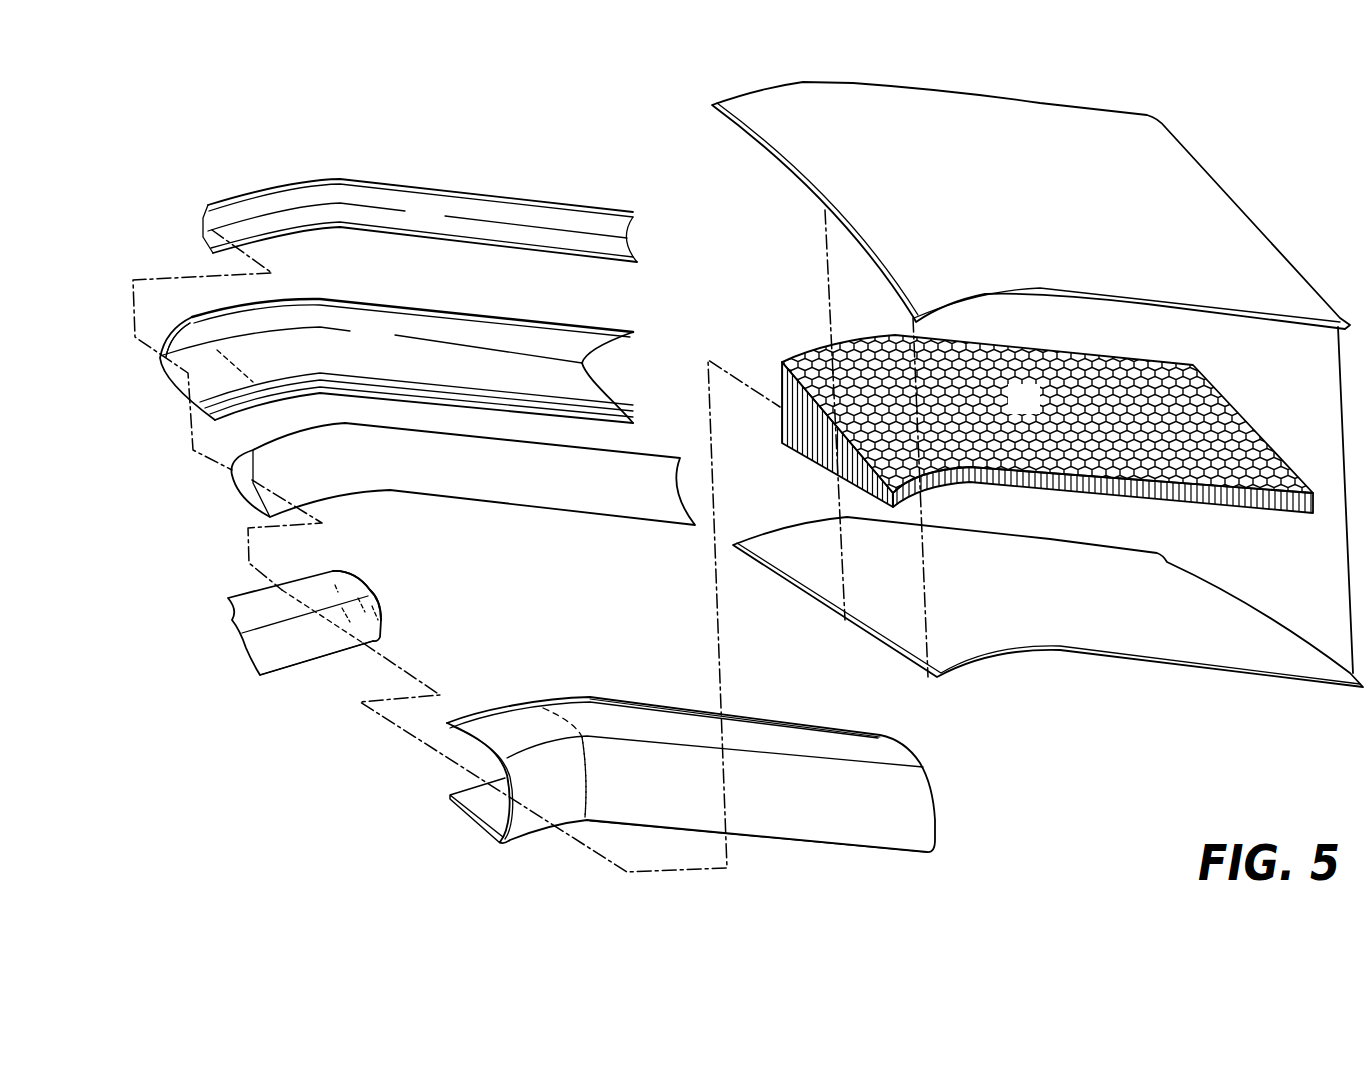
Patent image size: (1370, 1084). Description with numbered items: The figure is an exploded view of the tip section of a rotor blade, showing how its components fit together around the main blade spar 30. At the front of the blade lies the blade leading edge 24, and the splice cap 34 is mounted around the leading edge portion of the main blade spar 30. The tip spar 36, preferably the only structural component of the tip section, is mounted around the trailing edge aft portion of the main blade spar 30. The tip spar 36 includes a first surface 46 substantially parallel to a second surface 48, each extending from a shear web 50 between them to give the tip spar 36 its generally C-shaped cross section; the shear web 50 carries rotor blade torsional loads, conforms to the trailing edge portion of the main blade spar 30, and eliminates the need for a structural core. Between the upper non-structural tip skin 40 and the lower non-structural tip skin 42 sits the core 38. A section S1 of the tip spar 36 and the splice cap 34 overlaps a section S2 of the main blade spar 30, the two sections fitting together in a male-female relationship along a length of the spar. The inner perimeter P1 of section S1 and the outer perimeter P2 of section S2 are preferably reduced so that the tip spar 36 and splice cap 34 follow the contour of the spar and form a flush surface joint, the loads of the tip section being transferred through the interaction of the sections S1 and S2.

The blade leading edge 24 is at (440, 226).
The splice cap 34 is at (390, 351).
The main blade spar 30 is at (292, 657).
The upper non-structural tip skin 40 is at (1030, 200).
The core 38 is at (1038, 413).
The lower non-structural tip skin 42 is at (1046, 607).
The tip spar 36 is at (863, 821).
The first surface 46 is at (803, 738).
The second surface 48 is at (800, 837).
The shear web 50 is at (682, 789).
The inner perimeter P1 is at (487, 817).
The outer perimeter P2 is at (320, 582).
The section of the tip spar and splice cap S1 is at (521, 880).
The section of the main rotor blade spar S2 is at (313, 660).